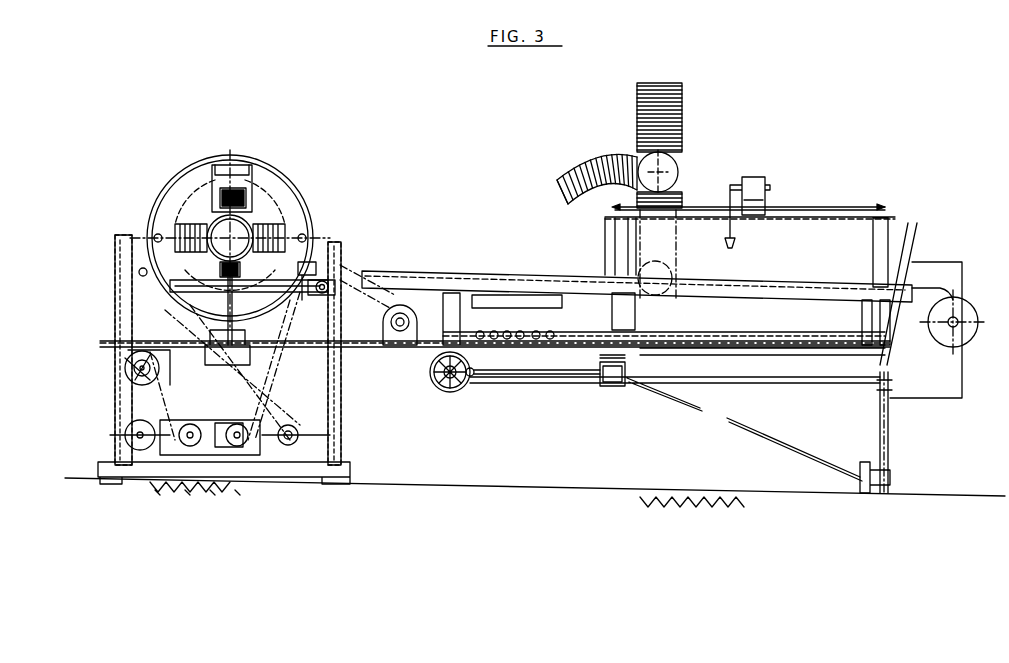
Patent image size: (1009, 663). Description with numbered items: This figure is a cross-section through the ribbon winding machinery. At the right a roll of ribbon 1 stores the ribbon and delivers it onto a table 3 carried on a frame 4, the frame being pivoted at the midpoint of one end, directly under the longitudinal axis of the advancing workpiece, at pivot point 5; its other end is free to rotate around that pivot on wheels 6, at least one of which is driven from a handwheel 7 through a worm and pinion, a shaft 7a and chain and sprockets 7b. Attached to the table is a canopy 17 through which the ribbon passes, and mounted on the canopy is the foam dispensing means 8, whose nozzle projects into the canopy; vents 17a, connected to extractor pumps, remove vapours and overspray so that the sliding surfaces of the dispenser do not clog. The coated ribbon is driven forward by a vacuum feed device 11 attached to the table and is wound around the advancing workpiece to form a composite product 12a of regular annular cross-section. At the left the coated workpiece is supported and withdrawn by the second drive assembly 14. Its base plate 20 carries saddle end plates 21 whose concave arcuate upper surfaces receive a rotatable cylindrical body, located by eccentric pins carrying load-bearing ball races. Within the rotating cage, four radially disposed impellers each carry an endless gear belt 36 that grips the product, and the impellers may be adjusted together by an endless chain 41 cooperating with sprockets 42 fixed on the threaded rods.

The roll of ribbon 1 is at (970, 318).
The table 3 is at (451, 283).
The frame 4 is at (565, 350).
The pivot point 5 is at (195, 370).
The wheels 6 is at (865, 494).
The handwheel 7 is at (448, 392).
The shaft 7a is at (808, 380).
The chain and sprockets 7b is at (888, 470).
The foam dispensing means 8 is at (758, 186).
The vacuum feed device 11 is at (252, 287).
The composite product 12a is at (213, 218).
The second drive assembly 14 is at (232, 172).
The canopy 17 is at (887, 232).
The vents 17a is at (678, 106).
The base plate 20 is at (156, 478).
The saddle end plates 21 is at (162, 300).
The endless gear belt 36 is at (180, 227).
The endless chain 41 is at (190, 200).
The sprockets 42 is at (300, 295).